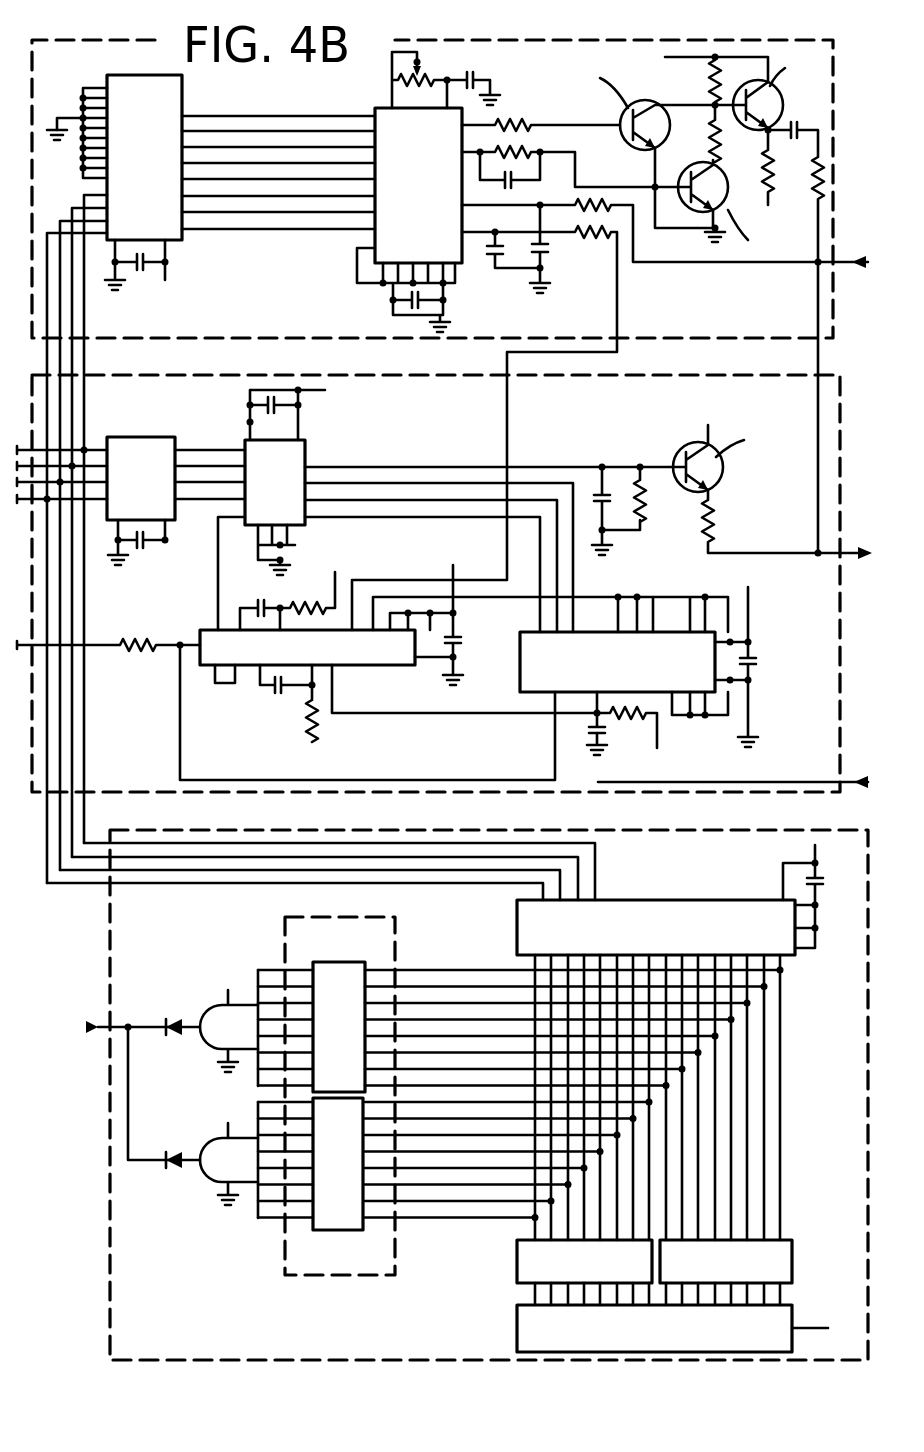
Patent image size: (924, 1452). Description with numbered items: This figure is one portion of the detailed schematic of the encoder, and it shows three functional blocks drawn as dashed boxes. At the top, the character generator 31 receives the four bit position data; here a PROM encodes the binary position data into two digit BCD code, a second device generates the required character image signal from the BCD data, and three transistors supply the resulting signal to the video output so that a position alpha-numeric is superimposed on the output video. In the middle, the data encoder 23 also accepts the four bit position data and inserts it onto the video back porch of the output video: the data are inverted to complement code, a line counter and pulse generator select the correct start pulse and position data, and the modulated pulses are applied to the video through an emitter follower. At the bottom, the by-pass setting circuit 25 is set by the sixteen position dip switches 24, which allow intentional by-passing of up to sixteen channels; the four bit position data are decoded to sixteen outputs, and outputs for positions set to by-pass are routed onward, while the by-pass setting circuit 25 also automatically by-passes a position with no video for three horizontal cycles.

The character generator 31 is at (756, 46).
The data encoder 23 is at (364, 370).
The by-pass setting circuit 25 is at (560, 834).
The 16 position dip switches 24 is at (224, 1302).